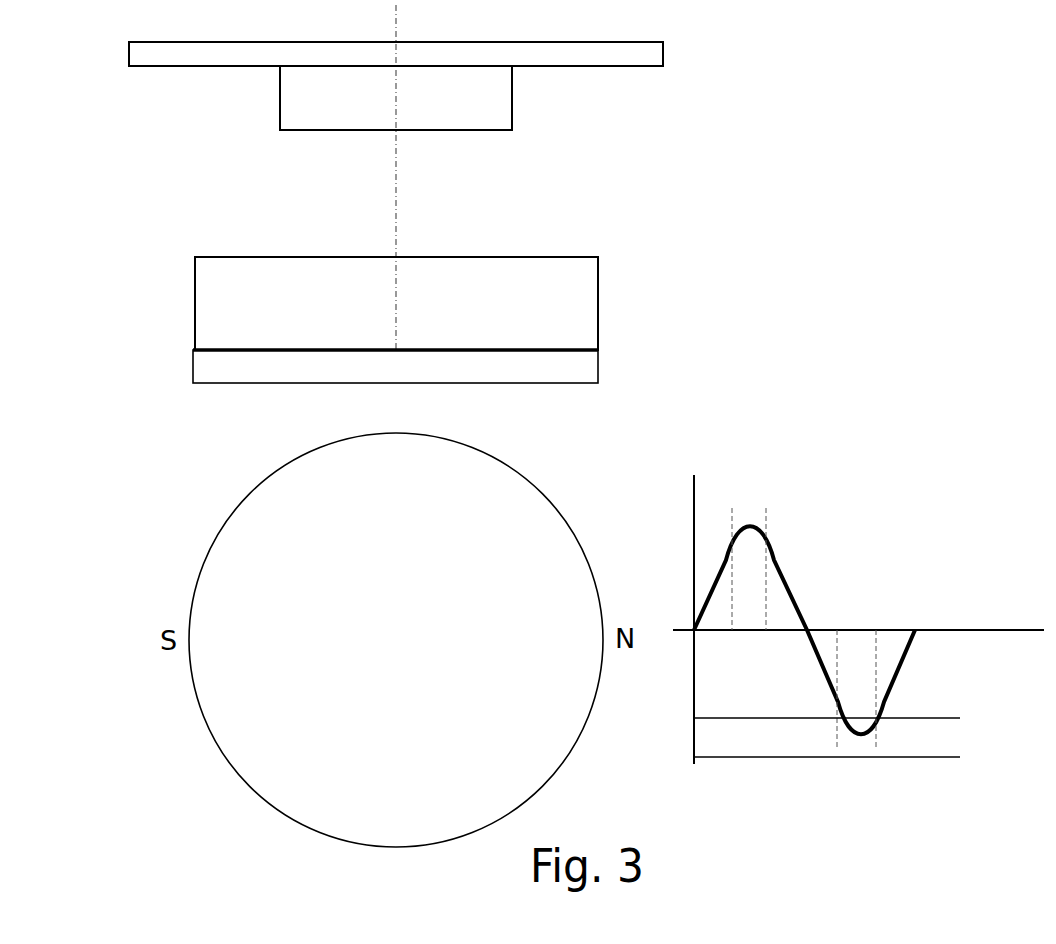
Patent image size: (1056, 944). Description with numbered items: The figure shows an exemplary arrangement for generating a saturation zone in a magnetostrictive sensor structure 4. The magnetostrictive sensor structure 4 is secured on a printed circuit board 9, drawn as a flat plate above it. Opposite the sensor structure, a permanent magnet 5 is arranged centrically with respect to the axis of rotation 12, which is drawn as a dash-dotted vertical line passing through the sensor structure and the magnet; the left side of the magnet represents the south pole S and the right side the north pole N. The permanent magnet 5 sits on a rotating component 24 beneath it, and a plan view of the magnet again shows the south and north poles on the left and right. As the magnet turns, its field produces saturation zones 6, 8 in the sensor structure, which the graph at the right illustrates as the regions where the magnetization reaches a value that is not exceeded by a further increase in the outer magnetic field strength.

The printed circuit board 9 is at (666, 52).
The magnetostrictive sensor structure 4 is at (480, 100).
The axis of rotation 12 is at (396, 216).
The permanent magnet 5 is at (601, 285).
The rotating component 24 is at (598, 361).
The saturation zone 6 is at (878, 522).
The saturation zone 8 is at (960, 735).